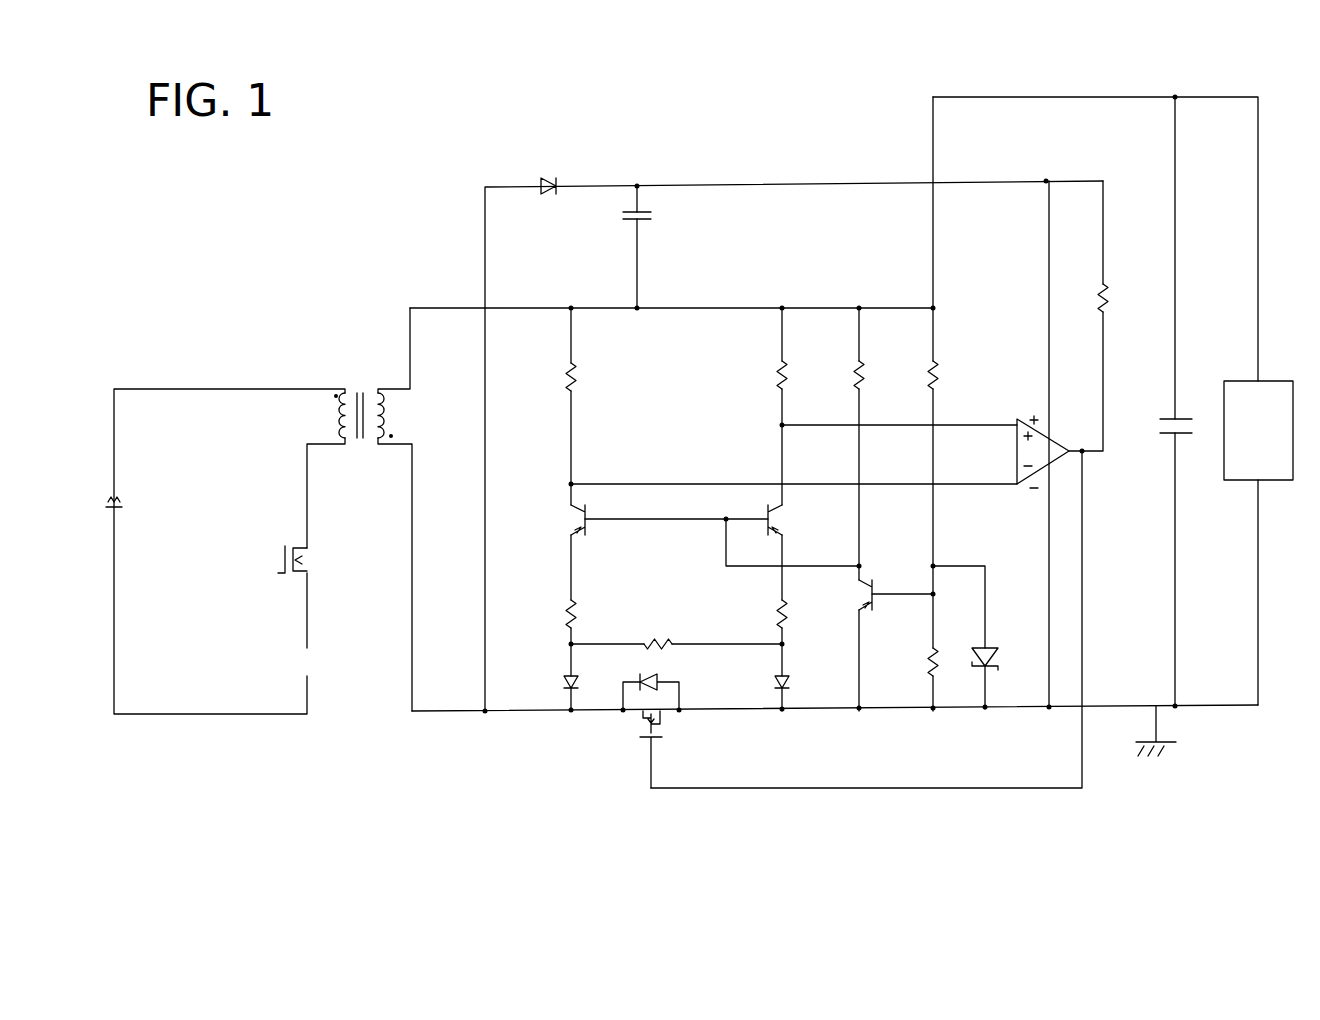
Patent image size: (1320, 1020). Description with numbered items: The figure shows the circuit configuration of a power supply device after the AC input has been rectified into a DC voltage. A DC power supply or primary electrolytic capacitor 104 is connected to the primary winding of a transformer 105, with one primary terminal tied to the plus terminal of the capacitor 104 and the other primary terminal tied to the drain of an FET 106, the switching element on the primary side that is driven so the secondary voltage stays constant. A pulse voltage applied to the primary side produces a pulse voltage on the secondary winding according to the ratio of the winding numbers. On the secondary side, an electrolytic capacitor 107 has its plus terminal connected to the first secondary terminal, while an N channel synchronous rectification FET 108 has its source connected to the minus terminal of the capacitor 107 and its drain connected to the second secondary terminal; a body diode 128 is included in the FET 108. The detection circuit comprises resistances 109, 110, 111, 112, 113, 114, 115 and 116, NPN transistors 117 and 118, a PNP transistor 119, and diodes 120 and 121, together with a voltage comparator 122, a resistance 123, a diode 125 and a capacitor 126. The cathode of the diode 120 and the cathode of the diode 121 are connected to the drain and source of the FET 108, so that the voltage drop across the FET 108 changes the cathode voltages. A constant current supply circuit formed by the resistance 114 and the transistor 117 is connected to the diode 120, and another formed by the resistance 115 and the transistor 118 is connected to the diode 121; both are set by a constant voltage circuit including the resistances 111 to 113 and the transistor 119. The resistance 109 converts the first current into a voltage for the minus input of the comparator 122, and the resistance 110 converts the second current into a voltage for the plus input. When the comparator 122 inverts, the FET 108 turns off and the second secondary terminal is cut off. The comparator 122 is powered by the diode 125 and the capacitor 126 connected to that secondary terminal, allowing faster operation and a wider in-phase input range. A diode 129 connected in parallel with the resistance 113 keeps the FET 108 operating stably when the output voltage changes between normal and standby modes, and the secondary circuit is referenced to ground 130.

The primary electrolytic capacitor 104 is at (118, 500).
The transformer 105 is at (359, 388).
The FET 106 is at (280, 574).
The secondary side electrolytic capacitor 107 is at (1167, 419).
The synchronous rectification FET 108 is at (662, 731).
The resistance 109 is at (577, 377).
The resistance 110 is at (785, 372).
The resistance 111 is at (863, 372).
The resistance 112 is at (937, 370).
The resistance 113 is at (930, 660).
The resistance 114 is at (568, 615).
The resistance 115 is at (786, 613).
The resistance 116 is at (659, 644).
The NPN transistor 117 is at (589, 532).
The NPN transistor 118 is at (775, 522).
The PNP transistor 119 is at (868, 589).
The diode 120 is at (569, 684).
The diode 121 is at (783, 682).
The voltage comparator 122 is at (1019, 426).
The resistance 123 is at (1104, 297).
The diode 125 is at (551, 180).
The capacitor 126 is at (640, 219).
The diode 128 is at (660, 674).
The diode 129 is at (988, 654).
The ground 130 is at (1164, 748).